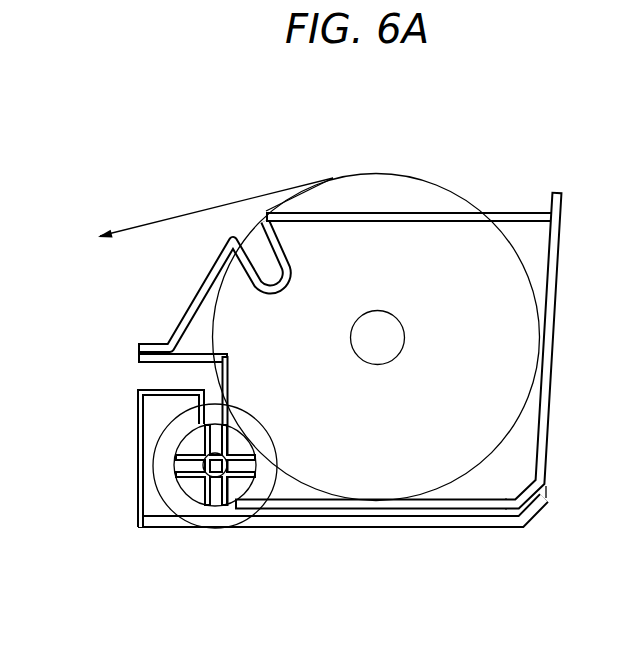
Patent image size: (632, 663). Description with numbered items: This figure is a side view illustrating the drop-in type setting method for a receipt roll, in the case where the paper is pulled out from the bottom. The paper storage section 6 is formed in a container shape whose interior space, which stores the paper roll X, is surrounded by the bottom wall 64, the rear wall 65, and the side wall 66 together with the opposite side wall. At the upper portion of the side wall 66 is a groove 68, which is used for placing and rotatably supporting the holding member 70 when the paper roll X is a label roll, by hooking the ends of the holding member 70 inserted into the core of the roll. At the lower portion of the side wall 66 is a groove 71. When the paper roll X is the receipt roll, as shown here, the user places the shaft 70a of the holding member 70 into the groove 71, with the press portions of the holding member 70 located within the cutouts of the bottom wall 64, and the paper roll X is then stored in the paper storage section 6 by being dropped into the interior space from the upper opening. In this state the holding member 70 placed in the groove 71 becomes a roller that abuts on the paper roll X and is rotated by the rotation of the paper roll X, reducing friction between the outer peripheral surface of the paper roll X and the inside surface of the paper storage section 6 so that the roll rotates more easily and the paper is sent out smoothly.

The paper storage section 6 is at (359, 335).
The paper roll X is at (417, 177).
The bottom wall 64 is at (462, 496).
The rear wall 65 is at (544, 268).
The side wall 66 is at (531, 233).
The groove 68 is at (258, 220).
The holding member 70 is at (181, 496).
The shaft 70a is at (232, 478).
The groove 71 is at (157, 362).